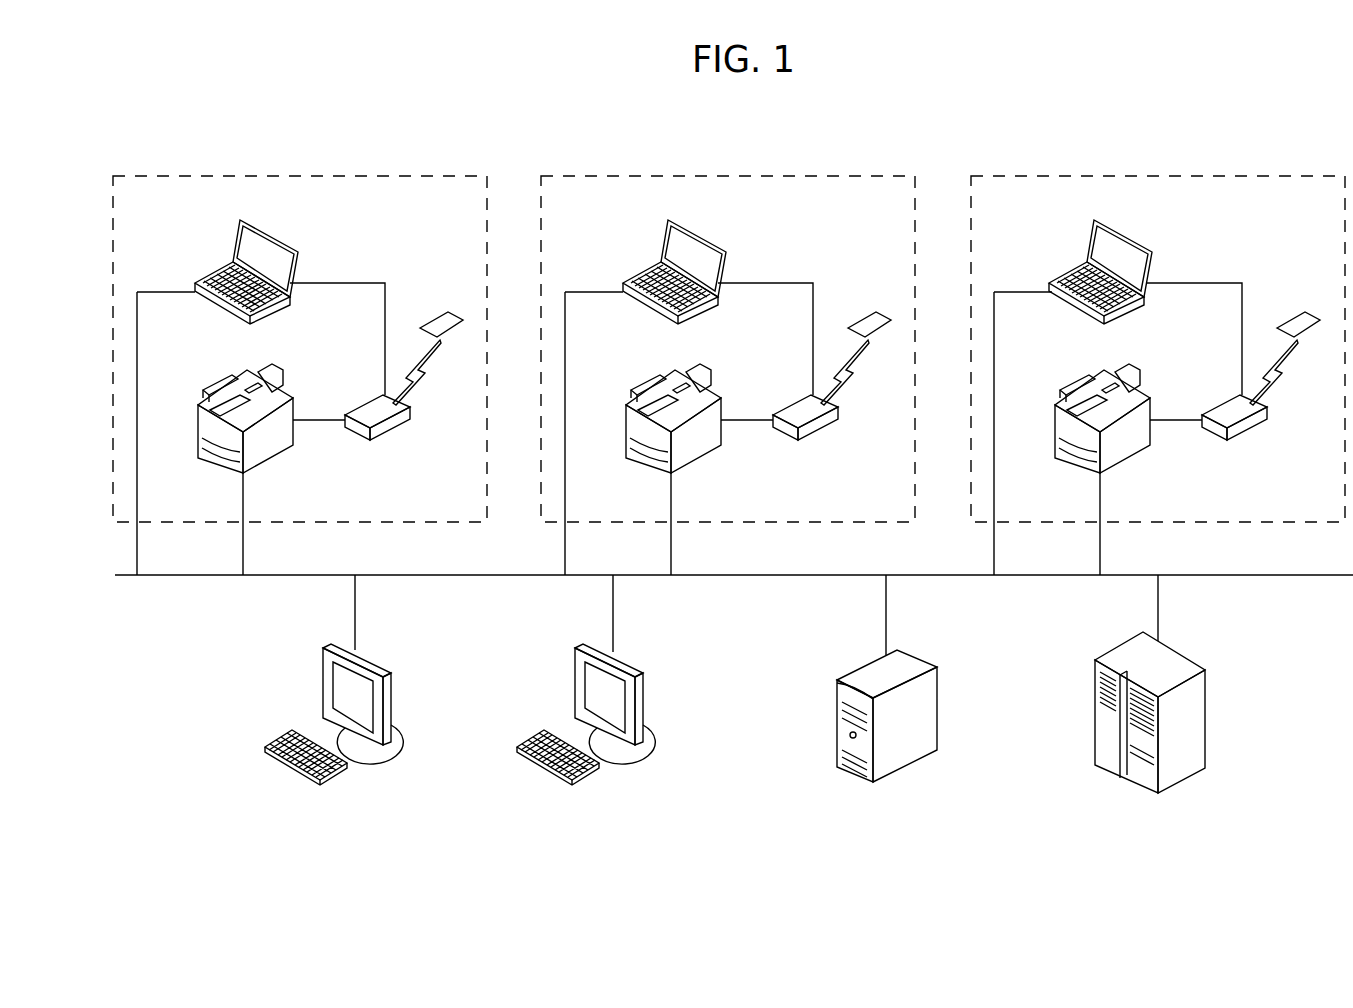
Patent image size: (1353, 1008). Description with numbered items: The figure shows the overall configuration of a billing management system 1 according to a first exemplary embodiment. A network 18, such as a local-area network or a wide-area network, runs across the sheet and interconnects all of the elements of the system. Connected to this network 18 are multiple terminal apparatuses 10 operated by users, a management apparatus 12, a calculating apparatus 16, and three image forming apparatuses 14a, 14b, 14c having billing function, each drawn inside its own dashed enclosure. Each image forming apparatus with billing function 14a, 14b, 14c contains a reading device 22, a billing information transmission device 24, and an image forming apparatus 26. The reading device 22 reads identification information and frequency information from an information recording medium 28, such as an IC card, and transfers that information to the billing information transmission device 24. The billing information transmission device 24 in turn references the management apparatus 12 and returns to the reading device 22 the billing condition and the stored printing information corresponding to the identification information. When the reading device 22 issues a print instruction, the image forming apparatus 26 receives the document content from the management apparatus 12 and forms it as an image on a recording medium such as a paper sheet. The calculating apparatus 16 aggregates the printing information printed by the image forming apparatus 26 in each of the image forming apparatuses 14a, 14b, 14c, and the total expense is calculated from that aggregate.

The billing management system 1 is at (733, 846).
The terminal apparatus 10 is at (373, 766).
The management apparatus 12 is at (845, 778).
The image forming apparatus with billing function 14a is at (440, 175).
The image forming apparatus with billing function 14b is at (728, 327).
The image forming apparatus with billing function 14c is at (1158, 327).
The calculating apparatus 16 is at (1130, 786).
The network 18 is at (1337, 578).
The reading device 22 is at (358, 442).
The billing information transmission device 24 is at (292, 254).
The image forming apparatus 26 is at (200, 460).
The information recording medium 28 is at (450, 318).